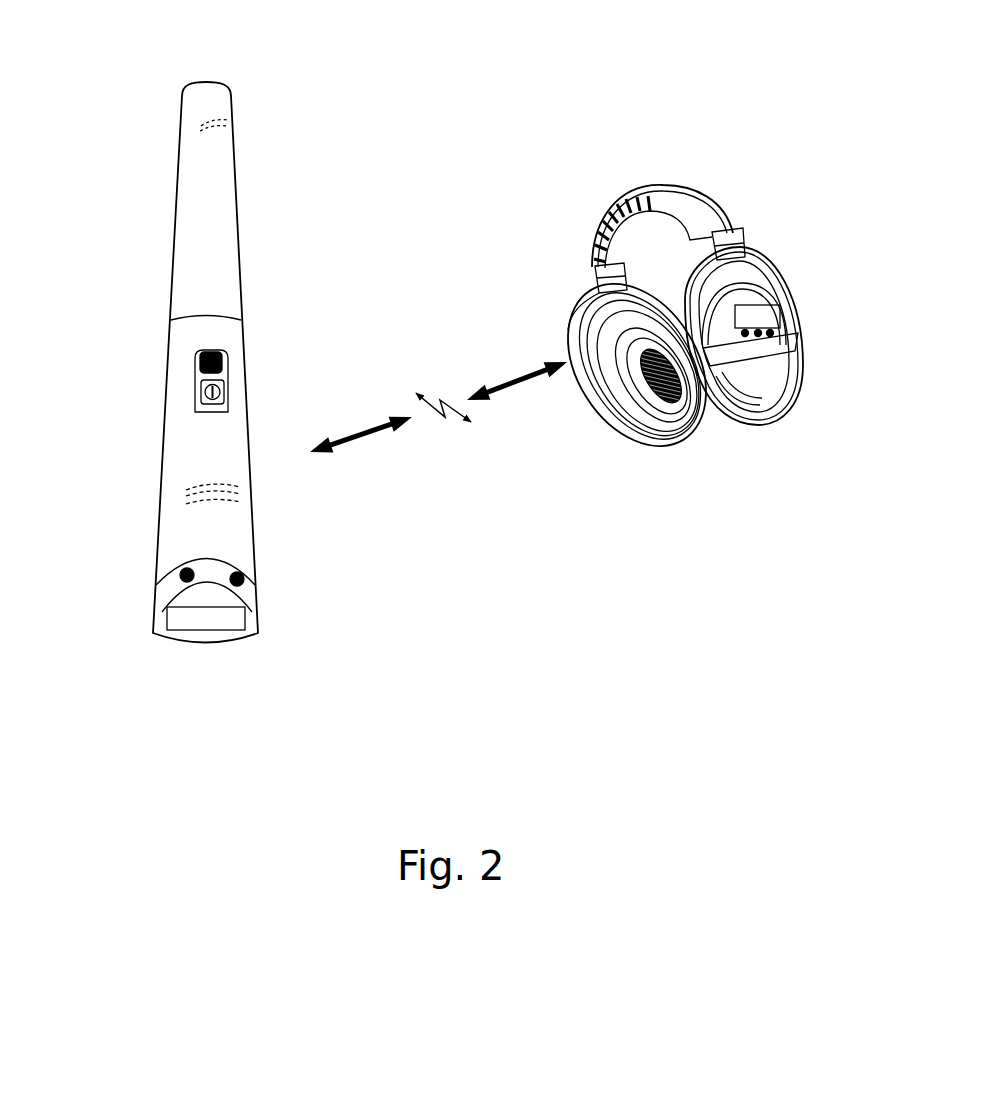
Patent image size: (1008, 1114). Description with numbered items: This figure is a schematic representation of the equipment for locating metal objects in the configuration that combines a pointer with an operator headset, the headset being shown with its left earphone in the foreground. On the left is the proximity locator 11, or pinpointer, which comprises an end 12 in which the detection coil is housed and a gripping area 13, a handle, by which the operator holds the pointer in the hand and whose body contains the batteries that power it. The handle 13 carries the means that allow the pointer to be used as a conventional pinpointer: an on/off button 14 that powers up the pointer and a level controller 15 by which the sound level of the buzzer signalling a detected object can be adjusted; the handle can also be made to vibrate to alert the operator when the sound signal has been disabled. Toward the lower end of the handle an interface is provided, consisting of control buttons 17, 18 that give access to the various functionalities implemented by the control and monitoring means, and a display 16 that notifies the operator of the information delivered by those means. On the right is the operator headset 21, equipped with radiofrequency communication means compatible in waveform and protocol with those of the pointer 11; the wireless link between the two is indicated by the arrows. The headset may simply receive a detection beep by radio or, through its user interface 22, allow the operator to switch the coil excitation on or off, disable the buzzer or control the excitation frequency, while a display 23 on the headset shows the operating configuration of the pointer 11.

The proximity locator 11 is at (325, 104).
The end 12 is at (249, 201).
The gripping area 13 is at (148, 369).
The on/off button 14 is at (265, 374).
The level controller 15 is at (155, 382).
The display 16 is at (282, 652).
The control button 17 is at (287, 554).
The control button 18 is at (129, 598).
The operator headset 21 is at (651, 135).
The user interface 22 is at (762, 282).
The display 23 is at (785, 336).